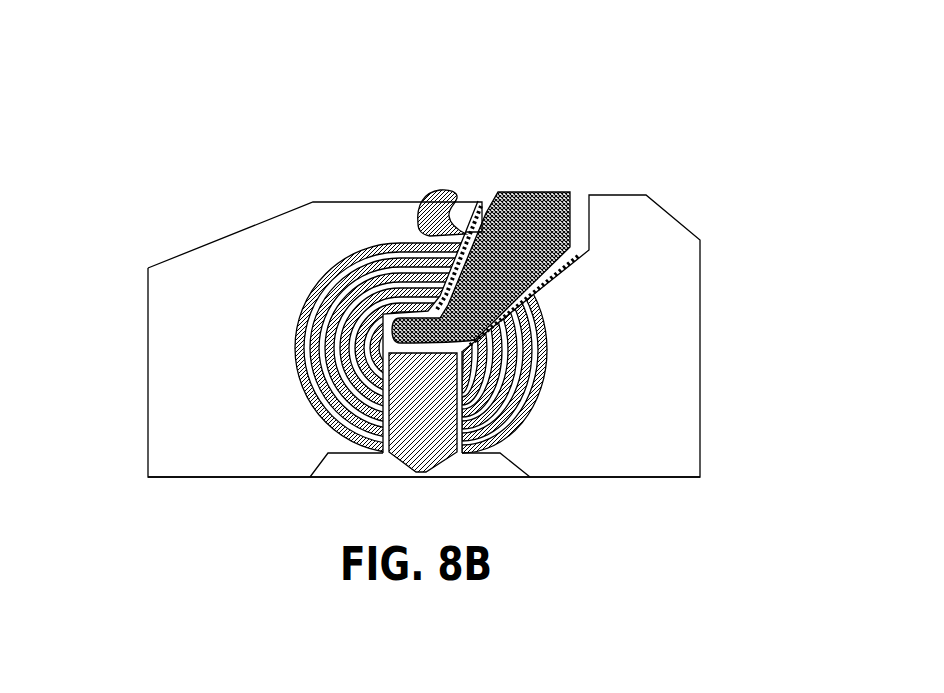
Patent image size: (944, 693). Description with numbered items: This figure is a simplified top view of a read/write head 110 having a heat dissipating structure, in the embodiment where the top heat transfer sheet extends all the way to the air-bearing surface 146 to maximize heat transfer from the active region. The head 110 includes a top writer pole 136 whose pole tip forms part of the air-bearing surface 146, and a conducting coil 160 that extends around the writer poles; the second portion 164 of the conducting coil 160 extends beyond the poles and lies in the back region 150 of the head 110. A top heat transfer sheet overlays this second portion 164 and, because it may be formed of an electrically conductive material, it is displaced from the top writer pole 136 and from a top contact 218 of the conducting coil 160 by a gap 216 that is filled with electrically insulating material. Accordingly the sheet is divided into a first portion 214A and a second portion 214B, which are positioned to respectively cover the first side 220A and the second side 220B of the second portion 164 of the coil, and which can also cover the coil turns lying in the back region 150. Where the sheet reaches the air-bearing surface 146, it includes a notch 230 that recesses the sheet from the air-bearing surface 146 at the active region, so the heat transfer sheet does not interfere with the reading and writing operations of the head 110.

The read/write head 110 is at (578, 115).
The top writer pole 136 is at (432, 448).
The air-bearing surface 146 is at (257, 478).
The back region 150 is at (396, 232).
The conducting coil 160 is at (273, 308).
The second portion 164 is at (310, 273).
The first portion of top heat transfer sheet 214A is at (200, 262).
The second portion of top heat transfer sheet 214B is at (665, 397).
The gap 216 is at (425, 347).
The top contact 218 is at (517, 200).
The first side 220A is at (292, 340).
The second side 220B is at (553, 337).
The notch 230 is at (350, 465).